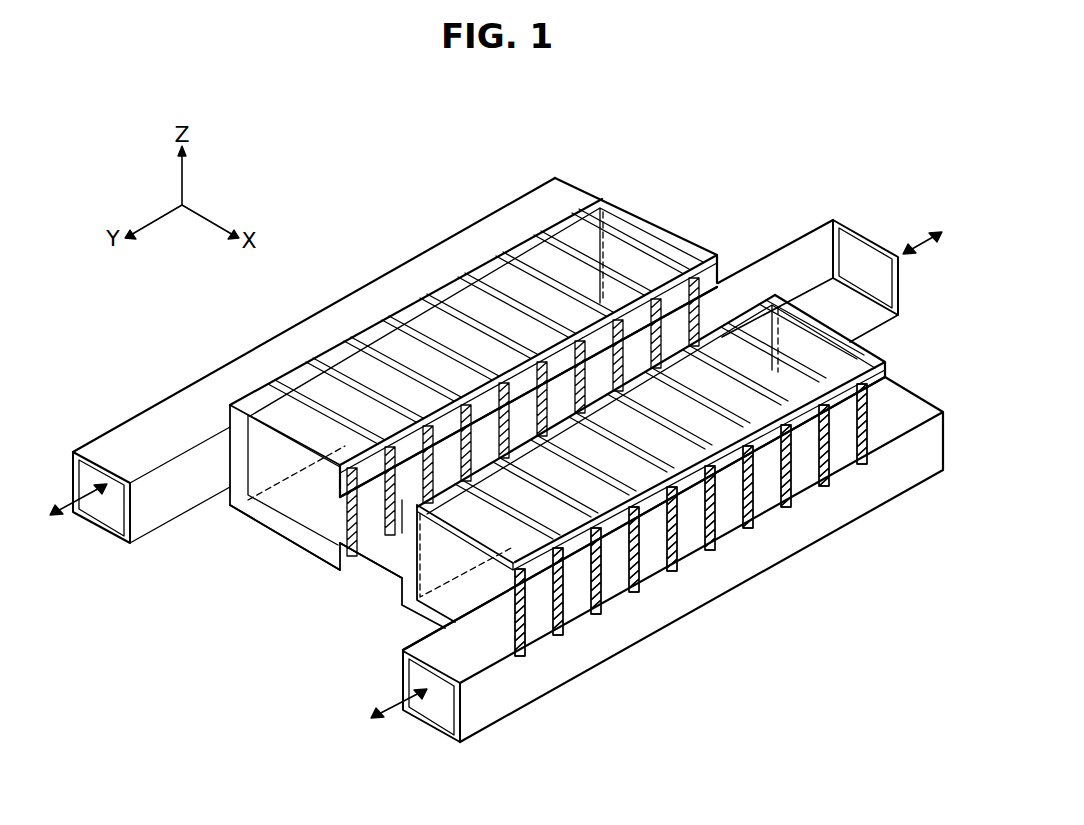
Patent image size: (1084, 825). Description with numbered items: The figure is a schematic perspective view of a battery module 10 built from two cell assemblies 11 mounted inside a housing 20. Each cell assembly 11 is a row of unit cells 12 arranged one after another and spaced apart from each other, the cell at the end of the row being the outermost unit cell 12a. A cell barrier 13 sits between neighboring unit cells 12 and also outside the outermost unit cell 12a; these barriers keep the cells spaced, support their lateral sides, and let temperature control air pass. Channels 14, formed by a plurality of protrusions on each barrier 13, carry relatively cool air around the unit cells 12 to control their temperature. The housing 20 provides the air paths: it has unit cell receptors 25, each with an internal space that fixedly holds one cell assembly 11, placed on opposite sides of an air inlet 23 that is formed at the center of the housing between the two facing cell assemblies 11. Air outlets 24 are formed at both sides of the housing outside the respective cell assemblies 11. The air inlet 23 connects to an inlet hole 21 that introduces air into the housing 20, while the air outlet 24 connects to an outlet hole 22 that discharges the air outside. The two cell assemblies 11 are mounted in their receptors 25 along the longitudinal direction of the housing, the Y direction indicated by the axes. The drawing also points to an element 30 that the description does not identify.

The battery module 10 is at (743, 176).
The cell assembly 11 is at (855, 618).
The unit cell 12 is at (657, 480).
The outermost unit cell 12a is at (540, 634).
The cell barrier 13 is at (640, 495).
The channel 14 is at (648, 533).
The housing 20 is at (490, 264).
The inlet hole 21 is at (902, 297).
The outlet hole 22 is at (110, 522).
The air inlet 23 is at (390, 553).
The air outlet 24 is at (323, 327).
The unit cell receptor 25 is at (312, 528).
The roof slats 30 is at (440, 398).